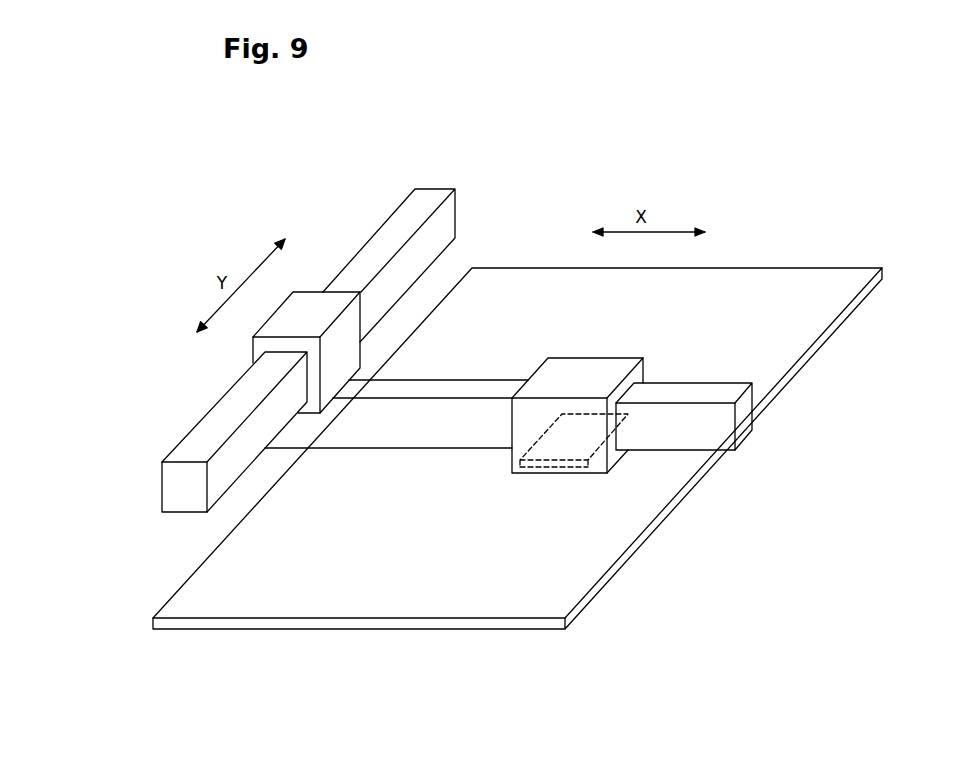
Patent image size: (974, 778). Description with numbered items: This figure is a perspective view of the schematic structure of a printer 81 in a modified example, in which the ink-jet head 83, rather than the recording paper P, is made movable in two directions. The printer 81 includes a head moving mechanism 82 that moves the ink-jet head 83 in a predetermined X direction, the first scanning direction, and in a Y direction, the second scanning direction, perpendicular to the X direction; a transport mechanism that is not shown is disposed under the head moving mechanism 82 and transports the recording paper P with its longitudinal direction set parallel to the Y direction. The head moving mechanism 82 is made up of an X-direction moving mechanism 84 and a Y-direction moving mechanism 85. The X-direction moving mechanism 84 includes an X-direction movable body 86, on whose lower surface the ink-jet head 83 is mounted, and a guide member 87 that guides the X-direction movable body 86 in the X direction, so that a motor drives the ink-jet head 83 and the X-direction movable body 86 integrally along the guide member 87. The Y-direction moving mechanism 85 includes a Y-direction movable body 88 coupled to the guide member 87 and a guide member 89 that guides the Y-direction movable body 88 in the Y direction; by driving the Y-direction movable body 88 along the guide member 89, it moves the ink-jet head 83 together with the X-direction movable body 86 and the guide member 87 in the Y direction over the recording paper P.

The printer 81 is at (546, 443).
The head moving mechanism 82 is at (493, 160).
The ink-jet head 83 is at (565, 478).
The X-direction moving mechanism 84 is at (560, 343).
The Y-direction moving mechanism 85 is at (462, 215).
The X-direction movable body 86 is at (585, 377).
The guide member 87 is at (727, 393).
The Y-direction movable body 88 is at (305, 302).
The guide member 89 is at (395, 227).
The recording paper P is at (312, 622).